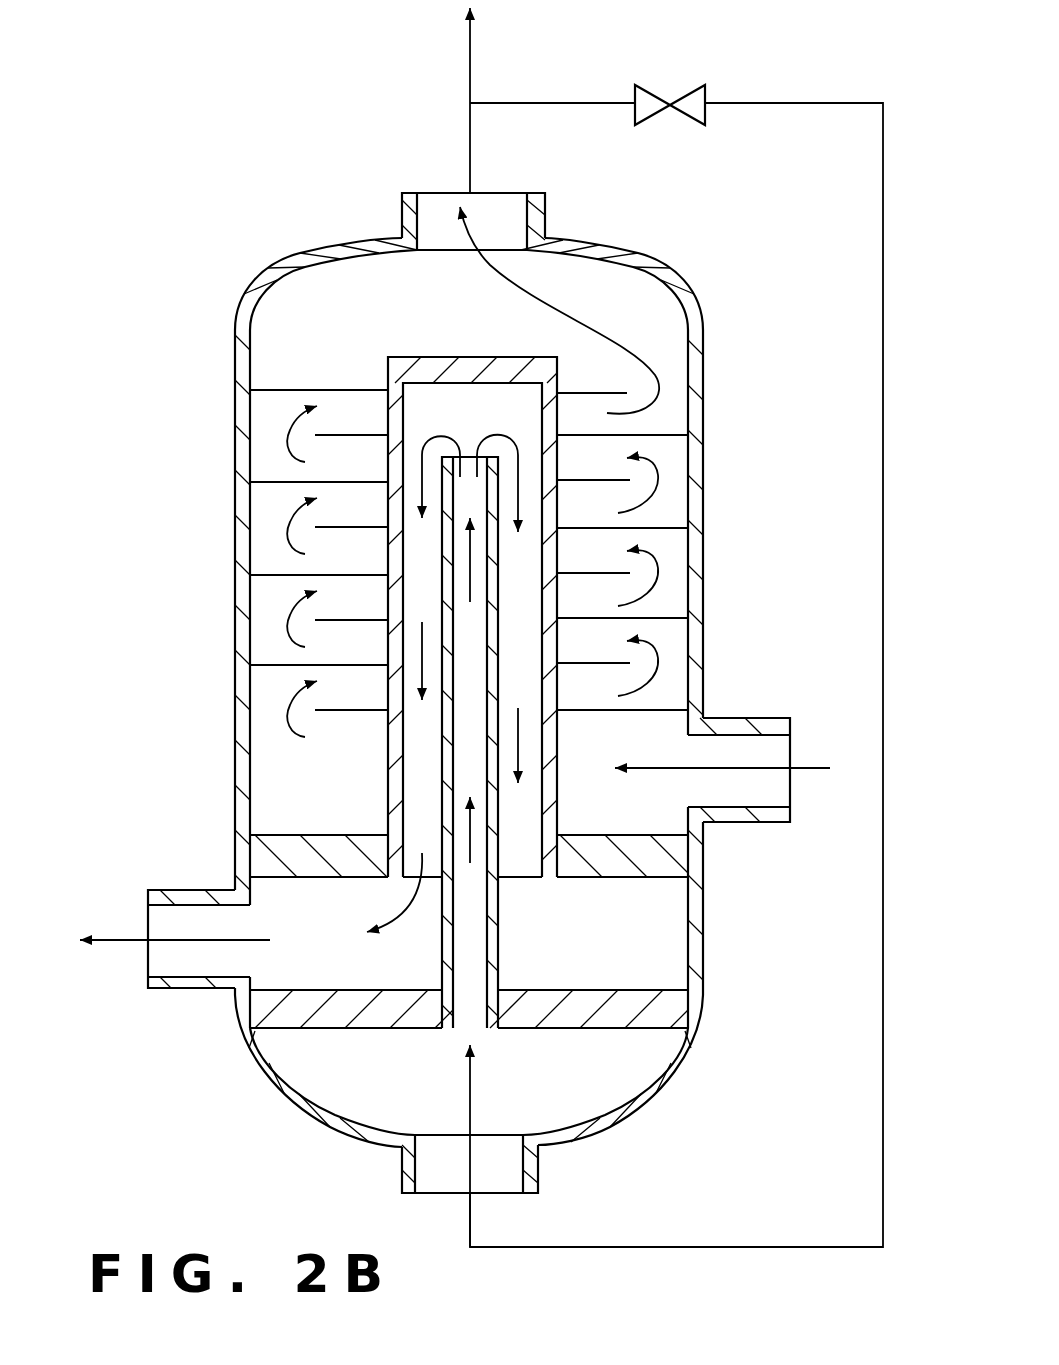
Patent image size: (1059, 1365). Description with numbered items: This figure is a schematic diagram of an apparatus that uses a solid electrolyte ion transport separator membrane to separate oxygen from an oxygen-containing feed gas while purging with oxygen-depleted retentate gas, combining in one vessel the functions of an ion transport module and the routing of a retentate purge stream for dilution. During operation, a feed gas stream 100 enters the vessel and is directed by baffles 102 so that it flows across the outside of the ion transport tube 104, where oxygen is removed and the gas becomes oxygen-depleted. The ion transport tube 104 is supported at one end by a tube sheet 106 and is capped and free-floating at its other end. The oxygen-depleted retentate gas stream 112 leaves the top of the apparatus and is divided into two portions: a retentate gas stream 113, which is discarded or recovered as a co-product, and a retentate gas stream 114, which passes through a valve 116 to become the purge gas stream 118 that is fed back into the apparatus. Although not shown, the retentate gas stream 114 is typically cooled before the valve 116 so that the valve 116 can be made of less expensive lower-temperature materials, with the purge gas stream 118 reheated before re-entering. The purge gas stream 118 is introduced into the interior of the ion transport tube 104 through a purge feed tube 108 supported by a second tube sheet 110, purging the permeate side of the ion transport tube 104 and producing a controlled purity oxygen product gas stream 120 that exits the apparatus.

The feed gas stream 100 is at (810, 768).
The baffles 102 is at (665, 700).
The ion transport tube 104 is at (388, 779).
The tube sheet 106 is at (284, 836).
The purge feed tube 108 is at (500, 940).
The tube sheet 110 is at (300, 1032).
The oxygen-depleted retentate gas stream 112 is at (470, 140).
The retentate gas stream 113 is at (470, 60).
The retentate gas stream 114 is at (540, 103).
The valve 116 is at (680, 85).
The purge gas stream 118 is at (783, 103).
The oxygen product gas stream 120 is at (113, 942).